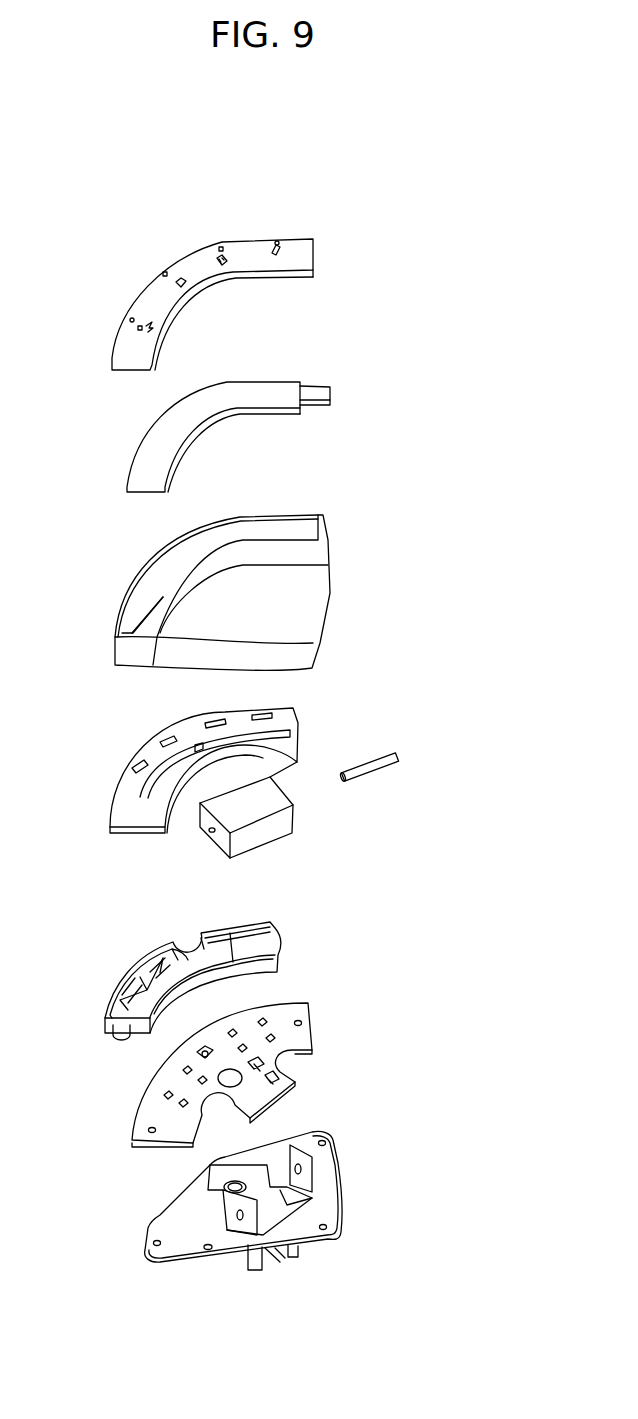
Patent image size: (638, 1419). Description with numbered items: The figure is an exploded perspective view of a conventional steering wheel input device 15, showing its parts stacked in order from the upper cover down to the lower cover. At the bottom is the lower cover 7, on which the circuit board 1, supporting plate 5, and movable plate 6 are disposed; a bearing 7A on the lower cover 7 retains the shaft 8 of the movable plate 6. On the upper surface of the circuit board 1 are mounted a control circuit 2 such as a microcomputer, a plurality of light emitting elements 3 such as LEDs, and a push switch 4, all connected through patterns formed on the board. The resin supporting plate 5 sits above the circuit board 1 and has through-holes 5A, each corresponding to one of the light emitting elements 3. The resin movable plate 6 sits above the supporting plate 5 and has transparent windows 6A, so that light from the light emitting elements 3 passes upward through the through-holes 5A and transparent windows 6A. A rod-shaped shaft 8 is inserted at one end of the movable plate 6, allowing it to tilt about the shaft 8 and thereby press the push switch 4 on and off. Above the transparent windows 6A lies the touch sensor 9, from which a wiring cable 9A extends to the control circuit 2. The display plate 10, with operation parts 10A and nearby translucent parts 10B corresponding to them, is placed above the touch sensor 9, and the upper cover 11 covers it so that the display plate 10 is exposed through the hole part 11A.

The steering wheel input device 15 is at (261, 167).
The display plate 10 is at (314, 253).
The operation parts 10A is at (181, 285).
The translucent parts 10B is at (132, 318).
The touch sensor 9 is at (137, 445).
The wiring cable 9A is at (323, 395).
The upper cover 11 is at (332, 578).
The hole part 11A is at (150, 583).
The movable plate 6 is at (298, 728).
The transparent windows 6A is at (133, 763).
The shaft 8 is at (290, 800).
The supporting plate 5 is at (285, 943).
The through-holes 5A is at (133, 997).
The circuit board 1 is at (312, 1030).
The control circuit 2 is at (277, 1070).
The light emitting elements 3 is at (178, 1107).
The push switch 4 is at (200, 1052).
The lower cover 7 is at (340, 1178).
The bearing 7A is at (237, 1215).